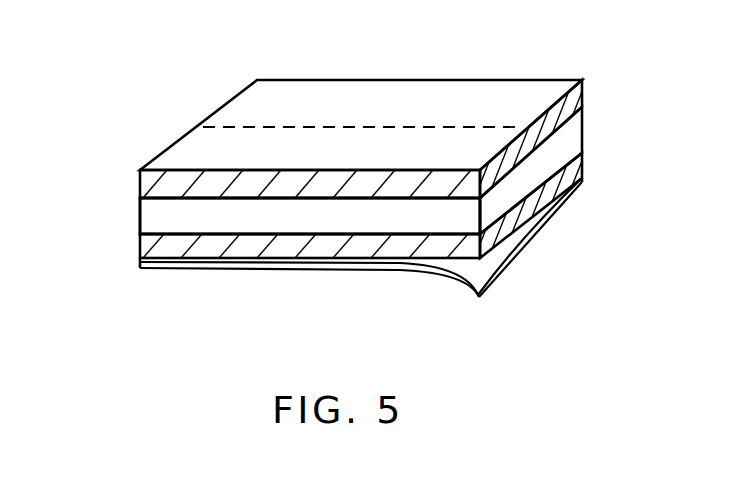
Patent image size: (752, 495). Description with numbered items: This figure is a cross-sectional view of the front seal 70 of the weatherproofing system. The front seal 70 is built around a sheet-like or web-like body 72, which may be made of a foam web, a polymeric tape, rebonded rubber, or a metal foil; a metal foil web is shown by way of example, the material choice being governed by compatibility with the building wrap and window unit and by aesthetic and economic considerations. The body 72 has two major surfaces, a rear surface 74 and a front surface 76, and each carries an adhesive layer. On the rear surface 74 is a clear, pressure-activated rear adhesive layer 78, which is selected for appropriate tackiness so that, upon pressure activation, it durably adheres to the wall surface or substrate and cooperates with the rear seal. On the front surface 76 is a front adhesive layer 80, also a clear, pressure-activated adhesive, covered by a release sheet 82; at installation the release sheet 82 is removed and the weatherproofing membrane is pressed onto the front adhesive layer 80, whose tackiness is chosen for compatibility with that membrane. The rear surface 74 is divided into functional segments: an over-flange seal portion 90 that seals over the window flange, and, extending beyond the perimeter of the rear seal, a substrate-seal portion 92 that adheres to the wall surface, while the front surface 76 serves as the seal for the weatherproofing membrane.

The front seal 70 is at (163, 275).
The sheet-like body 72 is at (562, 147).
The rear surface 74 is at (558, 133).
The front surface 76 is at (173, 232).
The rear adhesive layer 78 is at (580, 104).
The front adhesive layer 80 is at (310, 264).
The release sheet 82 is at (470, 267).
The over-flange seal portion 90 is at (250, 107).
The substrate-seal portion 92 is at (197, 157).